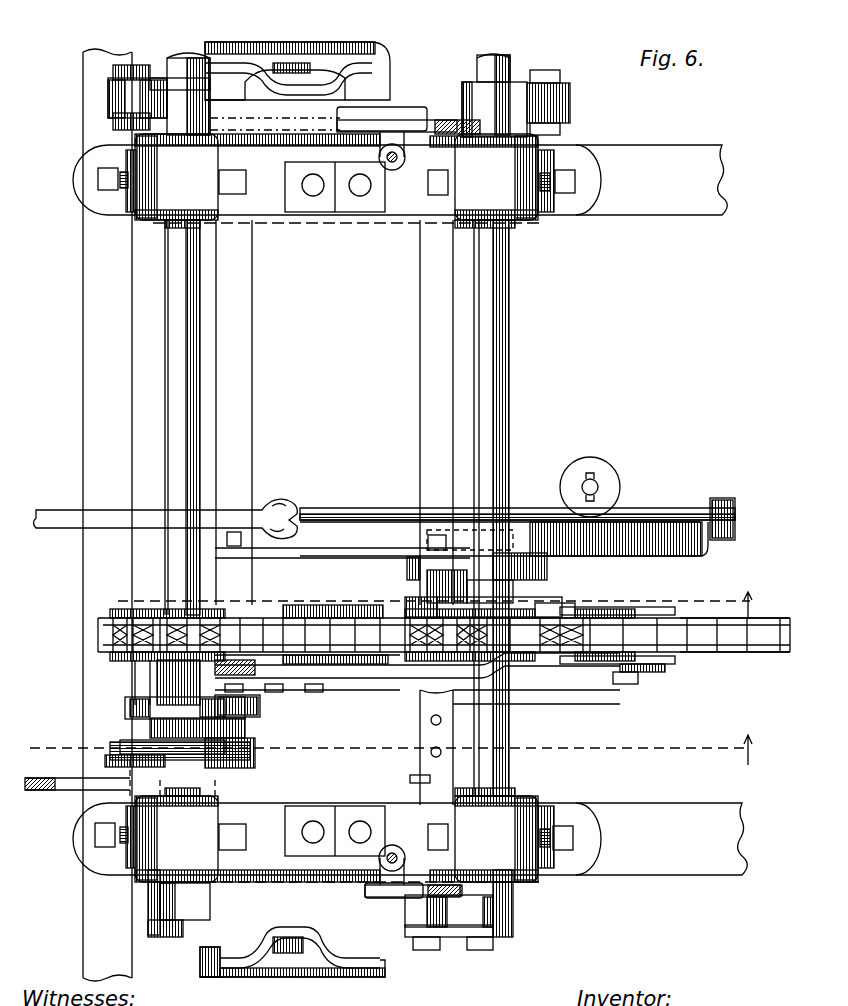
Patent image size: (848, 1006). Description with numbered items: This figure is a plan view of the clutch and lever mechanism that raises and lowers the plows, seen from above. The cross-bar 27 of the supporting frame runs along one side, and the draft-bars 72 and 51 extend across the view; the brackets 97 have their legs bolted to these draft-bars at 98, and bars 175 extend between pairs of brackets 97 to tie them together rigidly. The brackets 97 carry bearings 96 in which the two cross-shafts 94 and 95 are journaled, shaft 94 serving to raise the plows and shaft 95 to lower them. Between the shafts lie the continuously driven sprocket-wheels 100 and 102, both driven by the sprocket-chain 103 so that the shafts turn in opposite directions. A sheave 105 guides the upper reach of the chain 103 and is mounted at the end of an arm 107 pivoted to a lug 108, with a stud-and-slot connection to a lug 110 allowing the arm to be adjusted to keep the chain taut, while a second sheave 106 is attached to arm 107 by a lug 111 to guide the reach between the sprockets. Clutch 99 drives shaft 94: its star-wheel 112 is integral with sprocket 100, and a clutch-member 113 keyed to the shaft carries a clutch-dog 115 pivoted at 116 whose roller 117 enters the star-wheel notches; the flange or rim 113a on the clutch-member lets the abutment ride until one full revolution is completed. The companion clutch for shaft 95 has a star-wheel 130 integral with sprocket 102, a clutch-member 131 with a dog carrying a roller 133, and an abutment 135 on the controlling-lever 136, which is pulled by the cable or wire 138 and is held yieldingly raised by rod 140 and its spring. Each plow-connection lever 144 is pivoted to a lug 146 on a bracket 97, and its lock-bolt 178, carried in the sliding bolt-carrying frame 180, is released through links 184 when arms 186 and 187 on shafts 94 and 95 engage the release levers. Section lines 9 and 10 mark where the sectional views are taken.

The section line 9 is at (402, 750).
The section line 10 is at (122, 601).
The cross-bar 27 is at (90, 405).
The draft-bar 51 is at (698, 804).
The draft-bar 72 is at (663, 152).
The cross-shaft 94 is at (166, 362).
The cross-shaft 95 is at (506, 372).
The bearing 96 is at (545, 142).
The bracket 97 is at (152, 190).
The bolt connection 98 is at (98, 181).
The clutch 99 is at (200, 706).
The sprocket-wheel 100 is at (100, 637).
The sprocket-wheel 102 is at (598, 620).
The sprocket-chain 103 is at (735, 655).
The sheave 105 is at (667, 614).
The sheave 106 is at (322, 612).
The arm 107 is at (505, 686).
The lug 108 is at (238, 660).
The lug 110 is at (418, 710).
The lug 111 is at (322, 672).
The star-wheel 112 is at (122, 703).
The clutch-member 113 is at (120, 746).
The flange or rim 113a is at (105, 761).
The clutch-dog 115 is at (245, 733).
The pivot 116 is at (252, 745).
The roller 117 is at (260, 713).
The star-wheel 130 is at (545, 614).
The clutch-member 131 is at (420, 571).
The roller 133 is at (410, 610).
The abutment 135 is at (414, 590).
The controlling-lever 136 is at (342, 509).
The cable or wire 138 is at (57, 509).
The rod 140 is at (592, 486).
The lever 144 is at (447, 120).
The lug 146 is at (338, 208).
The bar 175 is at (253, 408).
The lock-bolt 178 is at (392, 170).
The bolt-carrying frame 180 is at (398, 108).
The link 184 is at (375, 80).
The arm 186 is at (150, 65).
The arm 187 is at (502, 112).